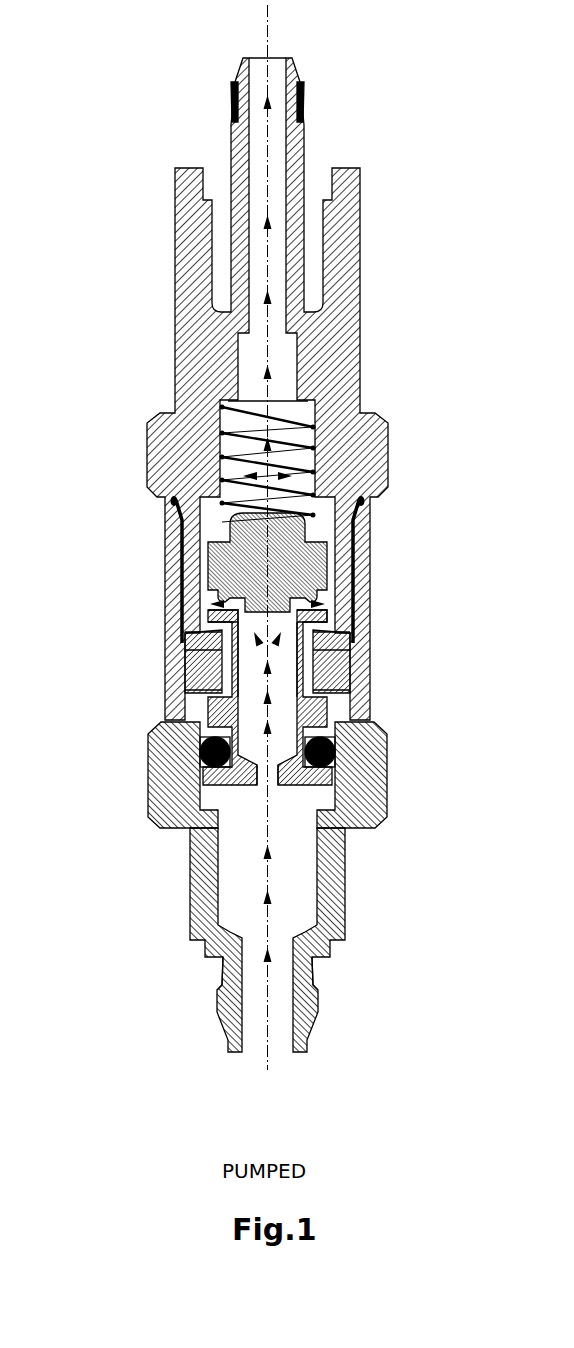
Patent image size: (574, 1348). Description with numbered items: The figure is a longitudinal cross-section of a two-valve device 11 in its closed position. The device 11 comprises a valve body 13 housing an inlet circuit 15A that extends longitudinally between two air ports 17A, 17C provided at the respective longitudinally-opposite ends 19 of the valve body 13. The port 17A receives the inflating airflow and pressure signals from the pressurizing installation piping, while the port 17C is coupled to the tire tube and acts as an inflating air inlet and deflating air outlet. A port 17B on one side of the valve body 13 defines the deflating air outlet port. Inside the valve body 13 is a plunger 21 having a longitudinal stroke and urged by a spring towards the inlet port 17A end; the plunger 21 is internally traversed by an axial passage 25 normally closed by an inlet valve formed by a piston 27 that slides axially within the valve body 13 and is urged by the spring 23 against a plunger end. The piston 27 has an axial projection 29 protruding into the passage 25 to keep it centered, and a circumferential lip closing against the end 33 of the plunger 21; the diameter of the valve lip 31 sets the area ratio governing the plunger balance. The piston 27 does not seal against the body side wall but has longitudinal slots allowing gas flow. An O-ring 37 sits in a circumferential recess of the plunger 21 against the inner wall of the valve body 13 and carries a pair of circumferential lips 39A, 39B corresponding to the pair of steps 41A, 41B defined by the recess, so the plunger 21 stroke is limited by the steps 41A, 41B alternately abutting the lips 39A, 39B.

The two-valve device 11 is at (443, 78).
The valve body 13 is at (170, 801).
The inlet circuit 15A is at (175, 541).
The inlet air port 17A is at (275, 1003).
The deflating air outlet port 17B is at (330, 713).
The tire-side air port 17C is at (273, 148).
The longitudinally-opposite ends 19 is at (300, 73).
The plunger 21 is at (205, 741).
The spring 23 is at (170, 516).
The axial passage 25 is at (275, 779).
The piston 27 is at (167, 598).
The axial projection 29 is at (165, 651).
The valve lip 31 is at (345, 606).
The plunger end 33 is at (167, 633).
The O-ring 37 is at (165, 671).
The circumferential lip 39A is at (345, 686).
The circumferential lip 39B is at (352, 643).
The step 41A is at (167, 704).
The step 41B is at (338, 626).